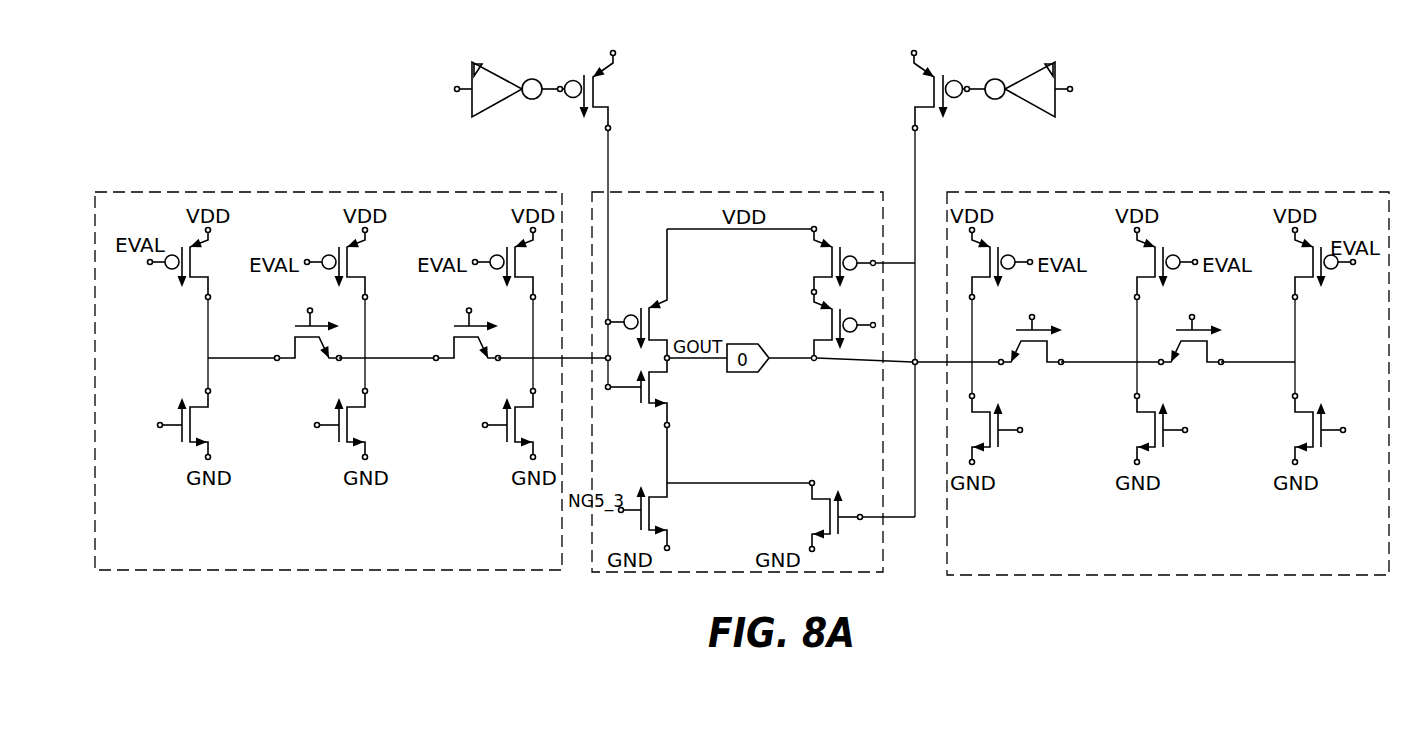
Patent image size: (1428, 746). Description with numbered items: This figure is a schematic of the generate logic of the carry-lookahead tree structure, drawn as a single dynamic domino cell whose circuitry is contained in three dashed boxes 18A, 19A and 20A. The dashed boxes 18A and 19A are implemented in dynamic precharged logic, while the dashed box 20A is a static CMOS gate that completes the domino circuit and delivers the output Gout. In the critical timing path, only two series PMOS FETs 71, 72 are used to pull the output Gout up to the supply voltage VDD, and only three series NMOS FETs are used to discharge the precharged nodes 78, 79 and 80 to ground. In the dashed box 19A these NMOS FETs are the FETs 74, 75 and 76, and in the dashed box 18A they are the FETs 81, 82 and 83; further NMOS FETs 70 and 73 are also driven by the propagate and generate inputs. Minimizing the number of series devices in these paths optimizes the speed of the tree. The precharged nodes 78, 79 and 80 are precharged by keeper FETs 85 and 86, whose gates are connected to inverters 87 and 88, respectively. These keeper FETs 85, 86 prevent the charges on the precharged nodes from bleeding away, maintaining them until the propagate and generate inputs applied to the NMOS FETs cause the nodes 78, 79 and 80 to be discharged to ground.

The dashed box 18A is at (1170, 192).
The dashed box 19A is at (314, 192).
The dashed box 20A is at (709, 192).
The NMOS FET 70 is at (360, 424).
The series PMOS FET 71 is at (479, 430).
The series PMOS FET 72 is at (822, 261).
The NMOS FET 73 is at (1193, 437).
The NMOS FET 74 is at (471, 356).
The NMOS FET 75 is at (311, 352).
The NMOS FET 76 is at (203, 424).
The precharged node 78 is at (551, 365).
The precharged node 79 is at (874, 331).
The precharged node 80 is at (876, 267).
The NMOS FET 81 is at (1035, 366).
The NMOS FET 82 is at (1196, 366).
The NMOS FET 83 is at (1300, 433).
The keeper FET 85 is at (604, 91).
The keeper FET 86 is at (918, 91).
The inverter 87 is at (493, 105).
The inverter 88 is at (1023, 106).